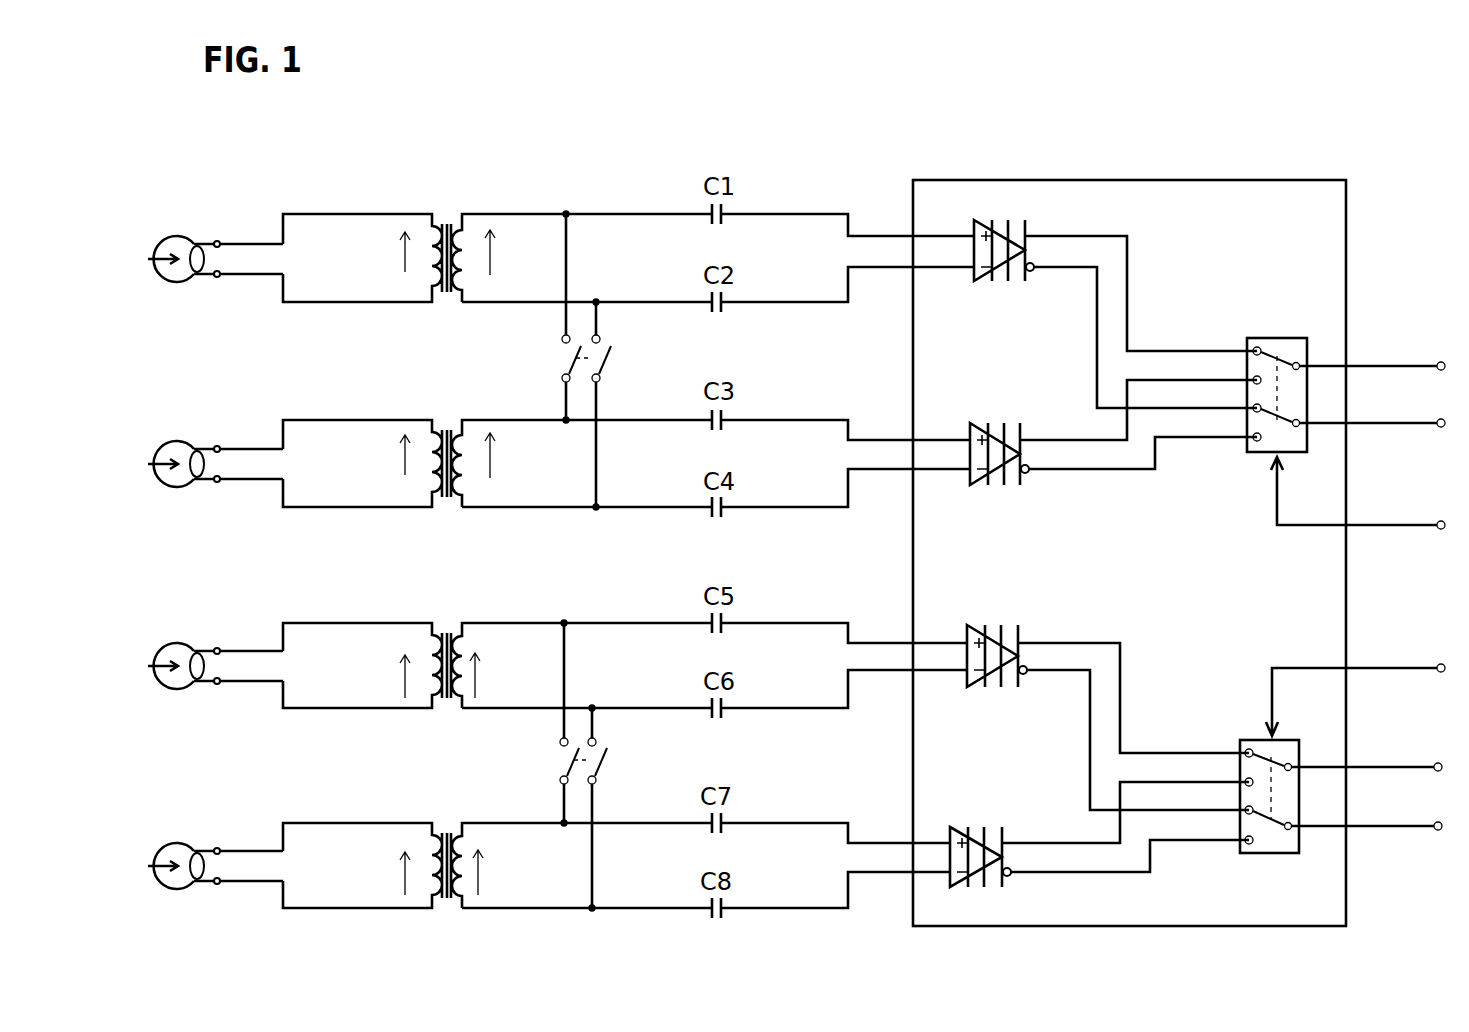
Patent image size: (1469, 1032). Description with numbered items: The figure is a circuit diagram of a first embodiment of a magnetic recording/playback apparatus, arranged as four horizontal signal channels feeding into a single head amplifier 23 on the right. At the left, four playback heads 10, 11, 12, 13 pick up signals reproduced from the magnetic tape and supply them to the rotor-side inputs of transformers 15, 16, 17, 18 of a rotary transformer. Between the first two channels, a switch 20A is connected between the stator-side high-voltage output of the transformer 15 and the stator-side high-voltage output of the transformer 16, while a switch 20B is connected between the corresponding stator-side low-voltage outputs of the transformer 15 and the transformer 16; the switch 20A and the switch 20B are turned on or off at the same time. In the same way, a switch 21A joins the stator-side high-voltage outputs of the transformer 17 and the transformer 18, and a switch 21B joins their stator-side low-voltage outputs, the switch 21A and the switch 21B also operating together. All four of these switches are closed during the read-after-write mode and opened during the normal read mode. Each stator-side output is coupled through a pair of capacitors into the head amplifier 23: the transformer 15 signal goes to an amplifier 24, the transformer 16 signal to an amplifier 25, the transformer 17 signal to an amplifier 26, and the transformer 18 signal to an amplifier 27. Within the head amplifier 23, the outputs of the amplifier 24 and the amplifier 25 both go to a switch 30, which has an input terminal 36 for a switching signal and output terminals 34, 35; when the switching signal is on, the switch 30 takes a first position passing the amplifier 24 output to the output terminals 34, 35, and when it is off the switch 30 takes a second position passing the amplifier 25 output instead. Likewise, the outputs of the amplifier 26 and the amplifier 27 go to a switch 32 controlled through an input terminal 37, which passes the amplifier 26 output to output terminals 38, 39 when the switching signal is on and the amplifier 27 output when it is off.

The playback head 10 is at (232, 207).
The playback head 11 is at (240, 415).
The playback head 12 is at (230, 615).
The playback head 13 is at (234, 815).
The transformer 15 is at (463, 214).
The transformer 16 is at (463, 420).
The transformer 17 is at (463, 623).
The transformer 18 is at (463, 823).
The switch 20A is at (562, 360).
The switch 20B is at (603, 355).
The switch 21A is at (560, 762).
The switch 21B is at (598, 757).
The head amplifier 23 is at (1347, 180).
The amplifier 24 is at (988, 283).
The amplifier 25 is at (985, 487).
The amplifier 26 is at (982, 689).
The amplifier 27 is at (962, 827).
The switch 30 is at (1307, 342).
The switch 32 is at (1300, 857).
The output terminal 34 is at (1440, 371).
The output terminal 35 is at (1440, 428).
The input terminal 36 is at (1440, 530).
The input terminal 37 is at (1440, 673).
The output terminal 38 is at (1437, 772).
The output terminal 39 is at (1437, 831).